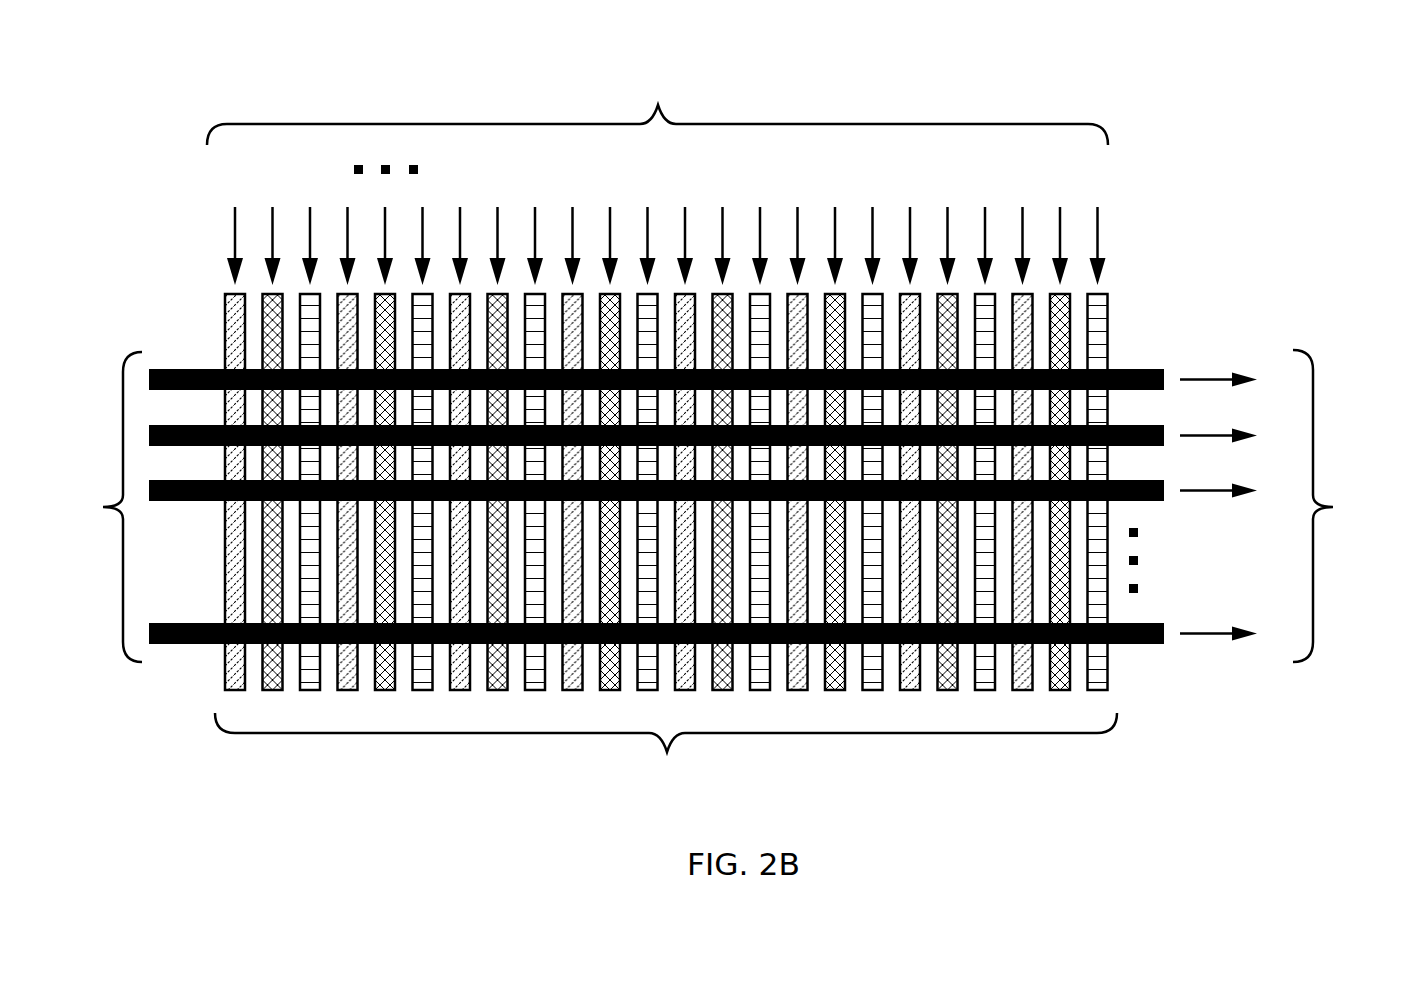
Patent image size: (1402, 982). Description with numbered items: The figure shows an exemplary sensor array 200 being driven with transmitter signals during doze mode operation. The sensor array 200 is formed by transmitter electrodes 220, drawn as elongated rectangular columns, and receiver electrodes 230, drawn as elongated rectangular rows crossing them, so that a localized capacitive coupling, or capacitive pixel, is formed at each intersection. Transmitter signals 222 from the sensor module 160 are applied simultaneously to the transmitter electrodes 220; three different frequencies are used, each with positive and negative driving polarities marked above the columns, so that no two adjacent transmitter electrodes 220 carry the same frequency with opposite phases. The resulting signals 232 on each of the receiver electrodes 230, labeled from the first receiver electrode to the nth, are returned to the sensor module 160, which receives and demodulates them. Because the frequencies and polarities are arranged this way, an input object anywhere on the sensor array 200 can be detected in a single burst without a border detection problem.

The transmitter electrodes 220 is at (666, 543).
The receiver electrodes 230 is at (103, 507).
The transmitter signals 222 is at (657, 164).
The sensor module 160 is at (956, 349).
The resulting signals 232 is at (1249, 506).
The sensor array 200 is at (1158, 793).